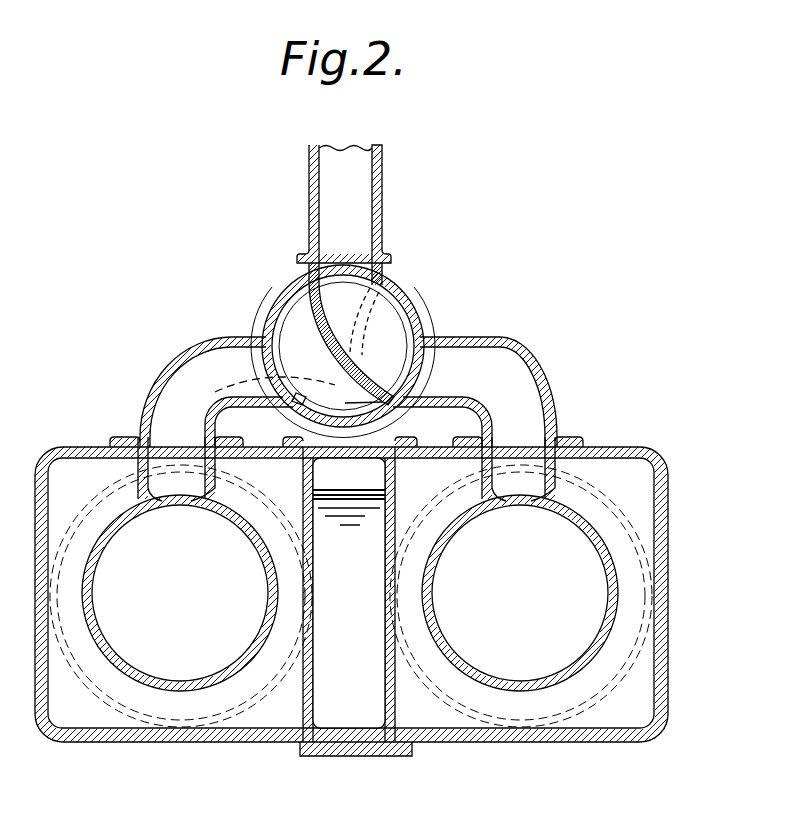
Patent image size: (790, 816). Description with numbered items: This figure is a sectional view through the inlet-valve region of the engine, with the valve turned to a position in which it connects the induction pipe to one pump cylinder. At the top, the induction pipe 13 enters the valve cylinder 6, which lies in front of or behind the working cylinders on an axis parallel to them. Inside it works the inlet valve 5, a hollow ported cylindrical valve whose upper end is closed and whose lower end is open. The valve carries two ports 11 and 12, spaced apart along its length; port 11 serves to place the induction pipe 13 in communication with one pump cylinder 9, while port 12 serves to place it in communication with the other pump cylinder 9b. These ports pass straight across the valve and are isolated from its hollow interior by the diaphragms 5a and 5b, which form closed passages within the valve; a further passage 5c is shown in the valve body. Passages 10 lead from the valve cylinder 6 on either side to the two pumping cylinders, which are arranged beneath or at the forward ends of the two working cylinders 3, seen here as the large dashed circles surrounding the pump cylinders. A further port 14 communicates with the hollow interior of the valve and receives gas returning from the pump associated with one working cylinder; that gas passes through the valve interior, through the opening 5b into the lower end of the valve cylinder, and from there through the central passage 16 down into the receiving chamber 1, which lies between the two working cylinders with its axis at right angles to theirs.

The receiving chamber 1 is at (351, 450).
The working cylinders 3 is at (609, 570).
The inlet valve 5 is at (290, 300).
The diaphragm 5a is at (343, 313).
The diaphragm 5b is at (373, 369).
The plug passage 5c is at (402, 392).
The valve cylinder 6 is at (270, 300).
The pumping cylinder 9 is at (518, 472).
The pump cylinder 9b is at (173, 473).
The passages 10 is at (176, 405).
The port 11 is at (343, 313).
The port 12 is at (262, 391).
The induction pipe 13 is at (347, 187).
The port 14 is at (230, 347).
The passage 16 is at (333, 468).